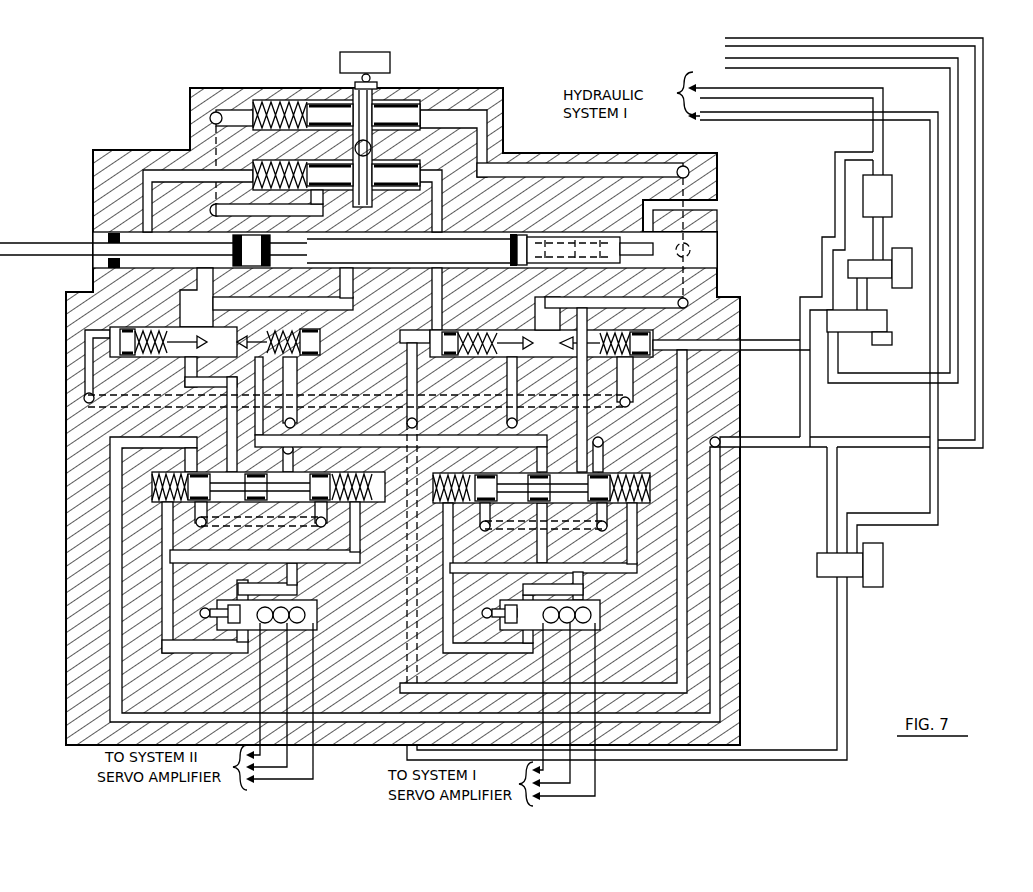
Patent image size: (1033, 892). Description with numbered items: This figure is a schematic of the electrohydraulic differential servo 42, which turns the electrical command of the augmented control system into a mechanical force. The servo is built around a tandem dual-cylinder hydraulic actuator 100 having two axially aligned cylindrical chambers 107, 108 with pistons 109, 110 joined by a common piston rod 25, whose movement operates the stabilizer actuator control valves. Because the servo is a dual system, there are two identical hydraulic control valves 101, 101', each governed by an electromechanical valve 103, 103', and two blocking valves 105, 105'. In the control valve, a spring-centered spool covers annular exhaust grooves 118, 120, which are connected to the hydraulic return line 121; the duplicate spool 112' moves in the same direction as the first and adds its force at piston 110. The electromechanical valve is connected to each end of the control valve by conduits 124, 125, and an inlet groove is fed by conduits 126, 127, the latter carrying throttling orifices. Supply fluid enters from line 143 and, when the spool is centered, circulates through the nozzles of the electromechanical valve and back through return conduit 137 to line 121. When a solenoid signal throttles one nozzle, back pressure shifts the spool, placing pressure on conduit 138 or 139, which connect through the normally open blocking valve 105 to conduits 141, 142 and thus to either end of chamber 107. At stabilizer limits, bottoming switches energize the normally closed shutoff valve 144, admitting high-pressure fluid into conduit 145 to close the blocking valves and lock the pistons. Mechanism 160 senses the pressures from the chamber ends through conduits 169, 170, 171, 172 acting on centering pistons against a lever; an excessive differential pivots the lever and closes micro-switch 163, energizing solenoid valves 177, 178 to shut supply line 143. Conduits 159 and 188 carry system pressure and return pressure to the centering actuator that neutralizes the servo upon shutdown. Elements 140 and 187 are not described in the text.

The electrohydraulic differential servo 42 is at (127, 121).
The piston rod 25 is at (47, 247).
The tandem dual-cylinder hydraulic actuator 100 is at (493, 223).
The hydraulic control valve 101 is at (554, 449).
The hydraulic control valve 101' is at (268, 457).
The electromechanical valve 103 is at (584, 700).
The electromechanical valve 103' is at (248, 691).
The blocking valve 105 is at (339, 328).
The blocking valve 105' is at (218, 335).
The cylindrical chamber 107 is at (449, 266).
The cylindrical chamber 108 is at (322, 262).
The piston 109 is at (523, 265).
The piston 110 is at (263, 270).
The control valve spool 112' is at (281, 469).
The exhaust groove 118 is at (490, 507).
The exhaust groove 120 is at (607, 511).
The hydraulic system return line 121 is at (882, 100).
The conduit 124 is at (453, 654).
The conduit 125 is at (581, 584).
The conduit 126 is at (542, 535).
The conduit 127 is at (522, 553).
The return conduit 137 is at (497, 621).
The conduit 138 is at (573, 415).
The conduit 139 is at (513, 387).
The passage 140 is at (617, 561).
The conduit 141 is at (700, 262).
The conduit 142 is at (448, 328).
The hydraulic supply line 143 is at (880, 133).
The solenoid-operated shutoff valve 144 is at (867, 567).
The conduit 145 is at (400, 373).
The conduit 159 is at (953, 183).
The pressure-differential mechanism 160 is at (334, 106).
The micro-switch 163 is at (388, 63).
The conduit 169 is at (147, 203).
The conduit 170 is at (237, 108).
The conduit 171 is at (440, 198).
The conduit 172 is at (572, 166).
The solenoid valve 177 is at (902, 262).
The solenoid valve 178 is at (882, 338).
The valve block 187 is at (887, 192).
The conduit 188 is at (978, 120).